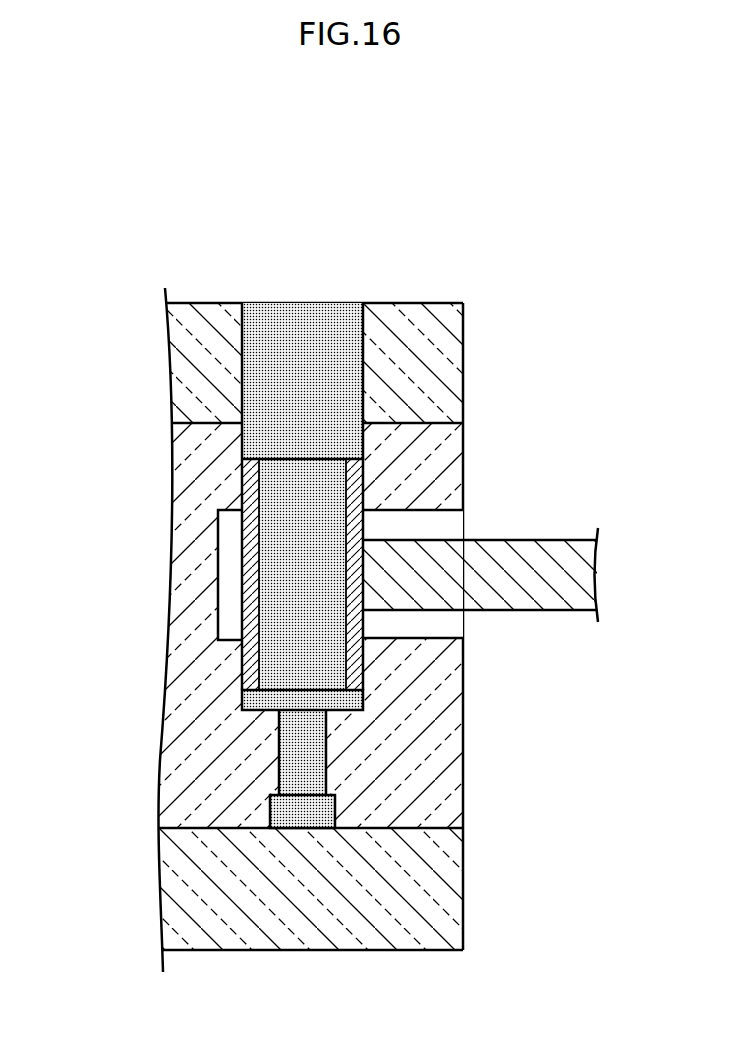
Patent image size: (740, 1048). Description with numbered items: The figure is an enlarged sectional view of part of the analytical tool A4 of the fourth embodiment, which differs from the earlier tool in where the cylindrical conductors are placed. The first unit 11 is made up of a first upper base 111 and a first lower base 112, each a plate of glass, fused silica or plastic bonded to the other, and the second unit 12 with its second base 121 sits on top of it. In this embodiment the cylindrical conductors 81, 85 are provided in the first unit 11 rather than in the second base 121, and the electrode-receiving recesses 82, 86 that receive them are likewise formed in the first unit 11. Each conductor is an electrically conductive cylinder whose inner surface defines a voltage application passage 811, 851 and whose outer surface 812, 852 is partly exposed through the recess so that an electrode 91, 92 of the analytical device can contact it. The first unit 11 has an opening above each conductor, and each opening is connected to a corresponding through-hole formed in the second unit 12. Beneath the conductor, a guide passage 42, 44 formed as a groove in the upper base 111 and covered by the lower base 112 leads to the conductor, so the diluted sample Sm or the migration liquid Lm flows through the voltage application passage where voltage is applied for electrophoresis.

The analytical tool A4 is at (122, 266).
The second base 121 is at (372, 363).
The second unit 12 is at (443, 373).
The voltage application passage 811 is at (265, 378).
The voltage application passage 851 is at (262, 511).
The cylindrical conductor 81 is at (425, 478).
The cylindrical conductor 85 is at (425, 478).
The electrode-receiving recess 82 is at (471, 574).
The electrode-receiving recess 86 is at (407, 529).
The electrode 91 is at (524, 575).
The electrode 92 is at (573, 568).
The outer surface 812 is at (425, 574).
The outer surface 852 is at (363, 582).
The diluted sample Sm is at (189, 574).
The migration liquid Lm is at (280, 576).
The first upper base 111 is at (443, 805).
The first lower base 112 is at (443, 867).
The first unit 11 is at (369, 686).
The guide passage 42 is at (331, 899).
The guide passage 44 is at (303, 818).